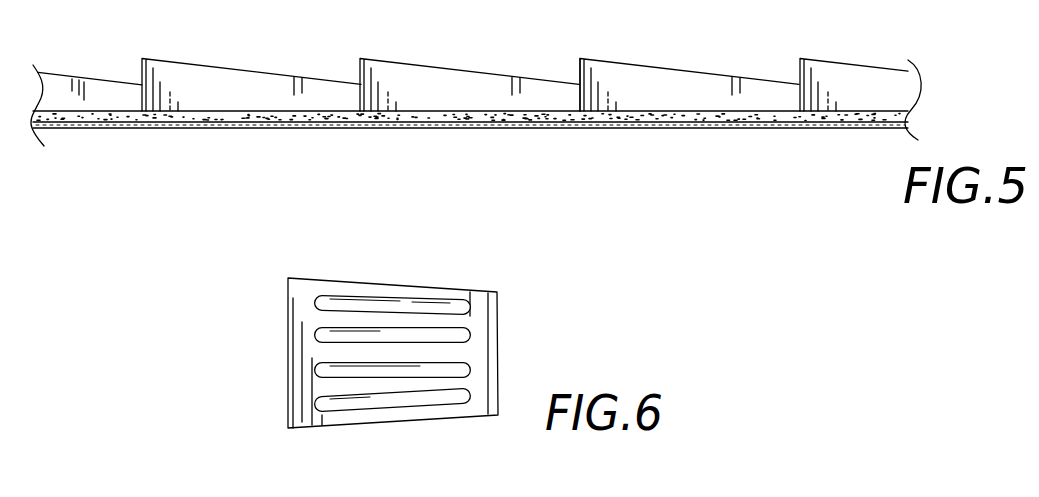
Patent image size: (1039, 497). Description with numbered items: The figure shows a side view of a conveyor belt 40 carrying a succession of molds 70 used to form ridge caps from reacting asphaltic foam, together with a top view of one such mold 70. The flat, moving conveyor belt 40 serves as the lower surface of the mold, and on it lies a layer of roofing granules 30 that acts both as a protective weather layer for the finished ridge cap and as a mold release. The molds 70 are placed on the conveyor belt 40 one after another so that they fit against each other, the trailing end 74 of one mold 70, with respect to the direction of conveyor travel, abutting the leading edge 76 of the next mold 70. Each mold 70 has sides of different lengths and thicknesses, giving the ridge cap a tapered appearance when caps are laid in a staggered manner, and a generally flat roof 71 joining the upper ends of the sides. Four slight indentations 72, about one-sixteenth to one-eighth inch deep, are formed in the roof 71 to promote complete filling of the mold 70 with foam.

In FIG. 5, the layer of roofing granules 30 is at (390, 121).
In FIG. 5, the conveyor belt 40 is at (512, 124).
In FIG. 5, the mold 70 is at (192, 72).
In FIG. 6, the mold 70 is at (407, 324).
In FIG. 5, the roof 71 is at (400, 62).
In FIG. 6, the roof 71 is at (308, 281).
In FIG. 6, the indentations 72 is at (362, 302).
In FIG. 5, the trailing end 74 is at (576, 72).
In FIG. 5, the leading edge 76 is at (585, 97).